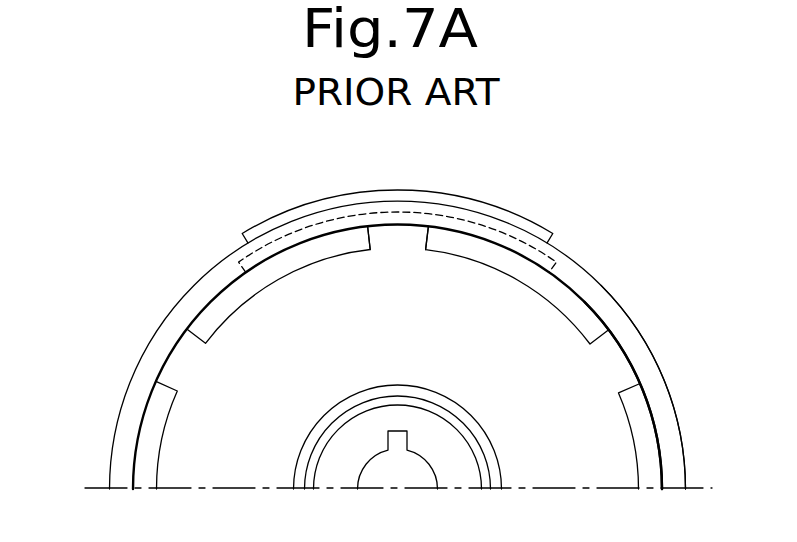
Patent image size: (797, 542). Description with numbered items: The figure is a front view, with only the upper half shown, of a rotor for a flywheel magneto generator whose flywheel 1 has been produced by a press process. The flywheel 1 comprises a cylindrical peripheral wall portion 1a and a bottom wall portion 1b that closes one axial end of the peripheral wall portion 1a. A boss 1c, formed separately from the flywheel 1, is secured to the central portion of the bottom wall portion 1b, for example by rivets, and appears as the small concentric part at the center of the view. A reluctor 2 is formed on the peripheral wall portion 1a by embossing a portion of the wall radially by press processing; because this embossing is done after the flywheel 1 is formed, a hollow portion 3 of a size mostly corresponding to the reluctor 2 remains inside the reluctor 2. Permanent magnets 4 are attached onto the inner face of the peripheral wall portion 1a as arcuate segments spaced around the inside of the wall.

The flywheel 1 is at (443, 345).
The cylindrical peripheral wall portion 1a is at (608, 290).
The bottom wall portion 1b is at (657, 387).
The boss 1c is at (358, 438).
The reluctor 2 is at (307, 210).
The hollow portion 3 is at (407, 227).
The permanent magnets 4 is at (220, 303).